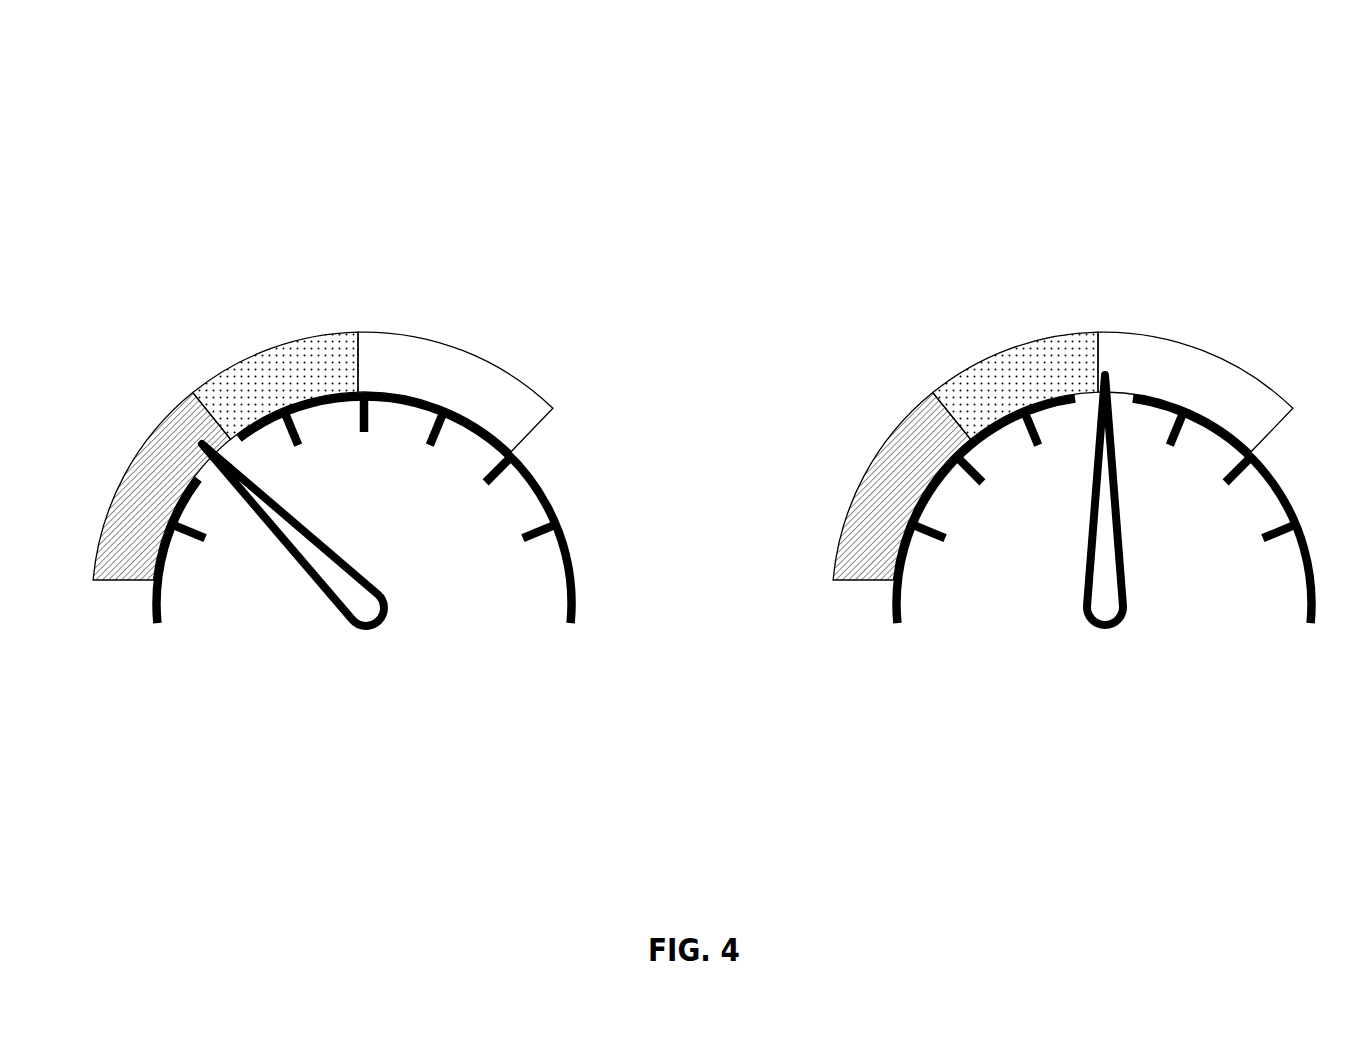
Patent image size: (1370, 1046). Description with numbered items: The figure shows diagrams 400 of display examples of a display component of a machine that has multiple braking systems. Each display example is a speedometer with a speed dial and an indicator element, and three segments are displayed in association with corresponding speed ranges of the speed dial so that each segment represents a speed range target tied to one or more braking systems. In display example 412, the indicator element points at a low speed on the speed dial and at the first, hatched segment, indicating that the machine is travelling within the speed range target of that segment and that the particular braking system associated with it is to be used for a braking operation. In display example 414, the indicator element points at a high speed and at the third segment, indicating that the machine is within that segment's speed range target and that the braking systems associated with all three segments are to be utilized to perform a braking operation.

The diagrams 400 is at (206, 63).
The display example 412 is at (528, 274).
The display example 414 is at (1250, 274).